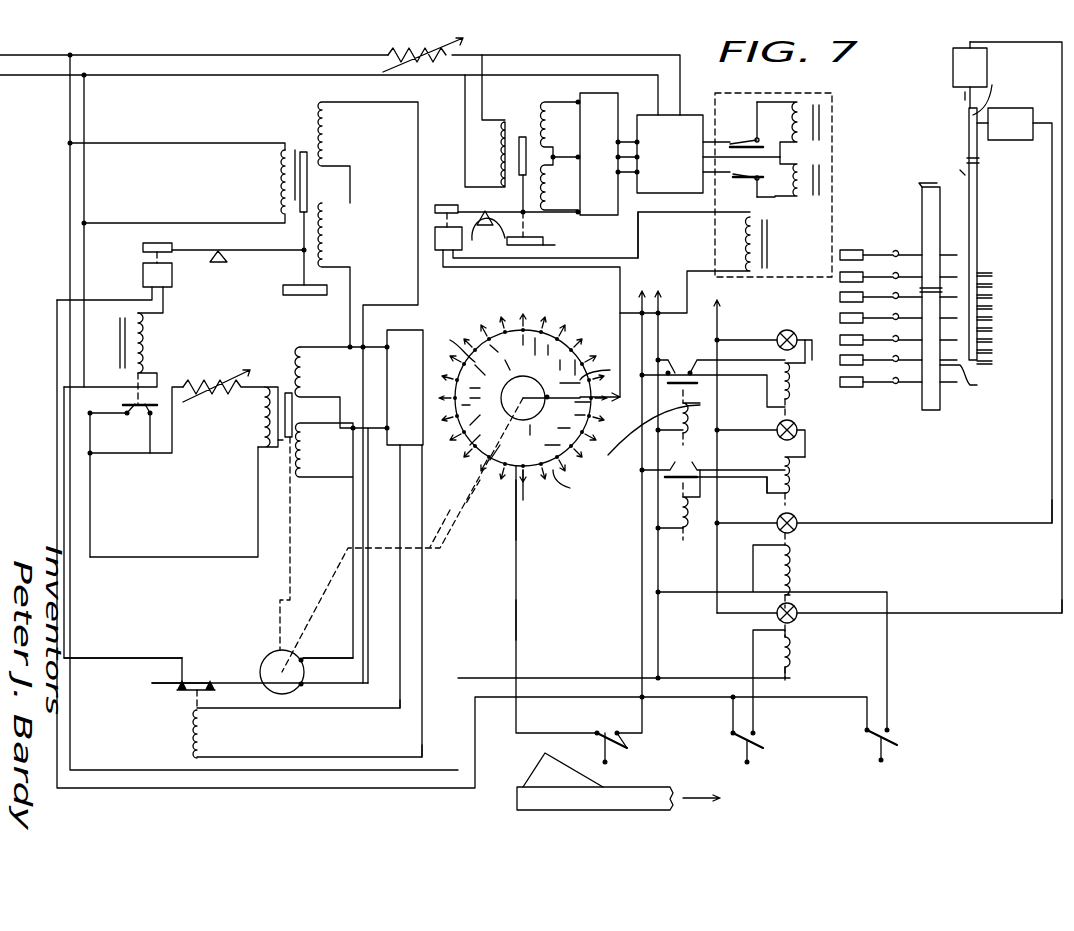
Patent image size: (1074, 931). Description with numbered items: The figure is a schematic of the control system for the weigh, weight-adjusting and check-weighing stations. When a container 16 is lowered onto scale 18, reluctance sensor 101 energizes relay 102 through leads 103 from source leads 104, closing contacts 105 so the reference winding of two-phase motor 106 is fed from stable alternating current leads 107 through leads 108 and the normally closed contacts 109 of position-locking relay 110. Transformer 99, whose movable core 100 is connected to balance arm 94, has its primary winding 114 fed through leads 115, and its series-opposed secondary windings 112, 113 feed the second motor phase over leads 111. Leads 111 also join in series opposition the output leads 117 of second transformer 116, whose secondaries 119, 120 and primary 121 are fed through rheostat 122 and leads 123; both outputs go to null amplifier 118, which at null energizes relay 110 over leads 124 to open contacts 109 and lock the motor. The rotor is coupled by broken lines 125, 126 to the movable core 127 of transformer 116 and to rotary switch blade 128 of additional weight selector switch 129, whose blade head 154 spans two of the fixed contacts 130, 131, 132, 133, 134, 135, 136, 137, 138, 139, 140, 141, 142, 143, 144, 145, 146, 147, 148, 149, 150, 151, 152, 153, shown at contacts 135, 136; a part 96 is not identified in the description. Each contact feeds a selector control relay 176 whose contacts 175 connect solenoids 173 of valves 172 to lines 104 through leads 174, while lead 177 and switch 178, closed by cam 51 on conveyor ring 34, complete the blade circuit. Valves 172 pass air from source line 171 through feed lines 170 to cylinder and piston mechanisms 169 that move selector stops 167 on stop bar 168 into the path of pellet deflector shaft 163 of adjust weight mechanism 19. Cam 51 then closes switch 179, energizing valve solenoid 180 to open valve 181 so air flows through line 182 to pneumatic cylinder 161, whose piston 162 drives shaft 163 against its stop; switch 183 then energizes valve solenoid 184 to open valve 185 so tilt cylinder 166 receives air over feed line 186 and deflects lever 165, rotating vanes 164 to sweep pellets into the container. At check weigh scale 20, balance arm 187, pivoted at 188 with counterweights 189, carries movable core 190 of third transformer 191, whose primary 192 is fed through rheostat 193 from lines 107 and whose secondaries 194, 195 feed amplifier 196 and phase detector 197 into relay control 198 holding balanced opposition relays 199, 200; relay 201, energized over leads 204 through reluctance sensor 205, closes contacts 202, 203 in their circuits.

The container 16 is at (143, 248).
The scale 18 is at (230, 268).
The adjust weight mechanism 19 is at (946, 158).
The check weigh scale 20 is at (545, 244).
The conveyor ring 34 is at (517, 800).
The cam 51 is at (537, 768).
The balance arm 94 is at (193, 252).
The contact bar 96 is at (306, 295).
The transformer 99 is at (302, 133).
The movable core 100 is at (300, 150).
The reluctance sensor 101 is at (172, 275).
The relay 102 is at (145, 335).
The leads 103 is at (64, 380).
The source leads 104 is at (664, 300).
The normally open contacts 105 is at (135, 418).
The two-phase motor 106 is at (278, 650).
The leads 107 is at (150, 76).
The leads 108 is at (84, 177).
The normally closed contacts 109 is at (208, 685).
The relay 110 is at (190, 740).
The leads 111 is at (398, 648).
The secondary winding 112 is at (328, 138).
The secondary winding 113 is at (330, 240).
The primary winding 114 is at (280, 185).
The leads 115 is at (150, 150).
The second variable linear differential transformer 116 is at (288, 385).
The output leads 117 is at (345, 412).
The null amplifier 118 is at (418, 396).
The secondary winding 119 is at (310, 352).
The secondary winding 120 is at (335, 495).
The primary winding 121 is at (258, 422).
The potentiometer or rheostat 122 is at (224, 370).
The leads 123 is at (118, 557).
The leads 124 is at (350, 757).
The broken lines 125 is at (290, 525).
The broken lines 126 is at (432, 515).
The movable core 127 is at (273, 462).
The rotary switch blade 128 is at (521, 515).
The additional weight selector switch 129 is at (536, 521).
The fixed contact 130 is at (516, 345).
The fixed contact 131 is at (526, 353).
The fixed contact 132 is at (545, 354).
The fixed contact 133 is at (549, 369).
The fixed contact 134 is at (571, 369).
The fixed contact 135 is at (566, 386).
The fixed contact 136 is at (577, 399).
The fixed contact 137 is at (576, 413).
The fixed contact 138 is at (556, 426).
The fixed contact 139 is at (531, 428).
The fixed contact 140 is at (542, 444).
The fixed contact 141 is at (563, 481).
The fixed contact 142 is at (525, 488).
The fixed contact 143 is at (500, 450).
The fixed contact 144 is at (474, 493).
The fixed contact 145 is at (480, 435).
The fixed contact 146 is at (482, 416).
The fixed contact 147 is at (465, 402).
The fixed contact 148 is at (483, 398).
The fixed contact 149 is at (482, 388).
The fixed contact 150 is at (450, 344).
The fixed contact 151 is at (476, 371).
The fixed contact 152 is at (489, 353).
The fixed contact 153 is at (506, 367).
The blade head 154 is at (609, 360).
The pneumatic cylinder 161 is at (953, 70).
The piston 162 is at (968, 95).
The pellet deflector shaft 163 is at (977, 228).
The vanes 164 is at (992, 355).
The lever 165 is at (998, 88).
The tilt cylinder 166 is at (1012, 120).
The selector stops 167 is at (970, 390).
The quantity selector stop bar 168 is at (922, 210).
The pneumatic cylinder and piston mechanisms 169 is at (855, 340).
The feed lines 170 is at (808, 340).
The source line of pressurized air 171 is at (748, 490).
The solenoid actuated valves 172 is at (782, 332).
The solenoids 173 is at (790, 388).
The leads 174 is at (690, 417).
The normally open contacts 175 is at (680, 370).
The selector control relays 176 is at (605, 455).
The lead 177 is at (516, 606).
The switch 178 is at (628, 745).
The switch 179 is at (758, 736).
The valve solenoid 180 is at (800, 660).
The valve 181 is at (796, 607).
The line 182 is at (945, 612).
The switch 183 is at (890, 737).
The valve solenoid 184 is at (795, 575).
The valve 185 is at (796, 515).
The feed line 186 is at (948, 502).
The balance arm 187 is at (470, 207).
The pivot 188 is at (491, 232).
The counterweights 189 is at (533, 244).
The movable core 190 is at (506, 213).
The third variable linear differential transformer 191 is at (521, 118).
The primary winding 192 is at (500, 145).
The adjusting rheostat or potentiometer 193 is at (379, 49).
The secondary winding 194 is at (548, 125).
The secondary winding 195 is at (548, 180).
The amplifier 196 is at (610, 142).
The phase detector 197 is at (685, 160).
The relay control 198 is at (740, 100).
The relay 199 is at (805, 130).
The relay 200 is at (805, 185).
The relay 201 is at (760, 250).
The normally open contacts 202 is at (740, 140).
The normally open contacts 203 is at (745, 175).
The leads 204 is at (620, 266).
The reluctance sensor 205 is at (435, 243).